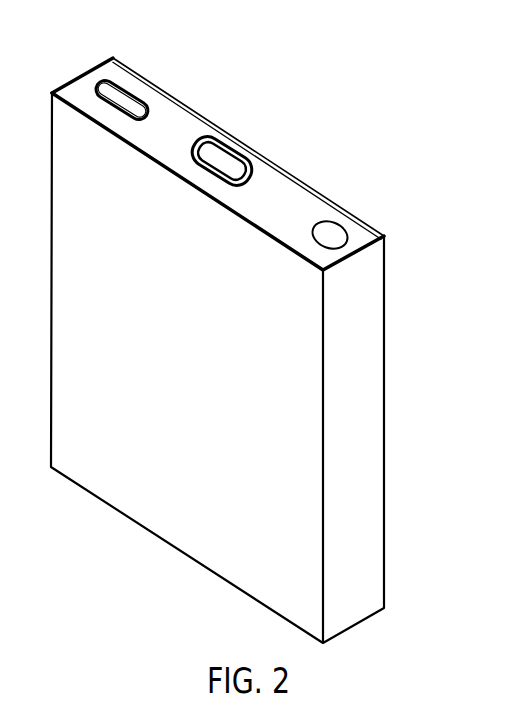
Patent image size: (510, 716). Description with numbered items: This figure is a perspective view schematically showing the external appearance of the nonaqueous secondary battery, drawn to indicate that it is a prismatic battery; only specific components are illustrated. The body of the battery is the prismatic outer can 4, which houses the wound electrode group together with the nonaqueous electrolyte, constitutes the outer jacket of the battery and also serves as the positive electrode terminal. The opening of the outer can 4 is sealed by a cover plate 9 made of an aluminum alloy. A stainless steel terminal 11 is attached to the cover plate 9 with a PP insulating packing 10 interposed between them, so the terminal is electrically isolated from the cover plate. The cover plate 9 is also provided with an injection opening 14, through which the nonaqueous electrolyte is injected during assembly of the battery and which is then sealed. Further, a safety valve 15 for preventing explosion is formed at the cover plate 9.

The prismatic outer can 4 is at (372, 373).
The cover plate 9 is at (160, 103).
The insulating packing 10 is at (260, 163).
The terminal 11 is at (222, 148).
The injection opening 14 is at (330, 237).
The safety valve 15 is at (118, 98).